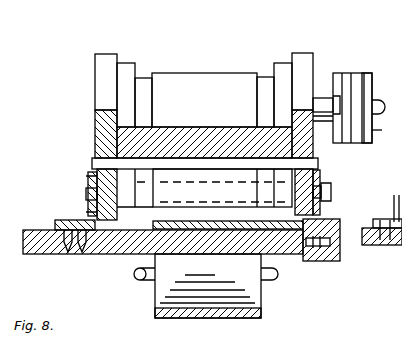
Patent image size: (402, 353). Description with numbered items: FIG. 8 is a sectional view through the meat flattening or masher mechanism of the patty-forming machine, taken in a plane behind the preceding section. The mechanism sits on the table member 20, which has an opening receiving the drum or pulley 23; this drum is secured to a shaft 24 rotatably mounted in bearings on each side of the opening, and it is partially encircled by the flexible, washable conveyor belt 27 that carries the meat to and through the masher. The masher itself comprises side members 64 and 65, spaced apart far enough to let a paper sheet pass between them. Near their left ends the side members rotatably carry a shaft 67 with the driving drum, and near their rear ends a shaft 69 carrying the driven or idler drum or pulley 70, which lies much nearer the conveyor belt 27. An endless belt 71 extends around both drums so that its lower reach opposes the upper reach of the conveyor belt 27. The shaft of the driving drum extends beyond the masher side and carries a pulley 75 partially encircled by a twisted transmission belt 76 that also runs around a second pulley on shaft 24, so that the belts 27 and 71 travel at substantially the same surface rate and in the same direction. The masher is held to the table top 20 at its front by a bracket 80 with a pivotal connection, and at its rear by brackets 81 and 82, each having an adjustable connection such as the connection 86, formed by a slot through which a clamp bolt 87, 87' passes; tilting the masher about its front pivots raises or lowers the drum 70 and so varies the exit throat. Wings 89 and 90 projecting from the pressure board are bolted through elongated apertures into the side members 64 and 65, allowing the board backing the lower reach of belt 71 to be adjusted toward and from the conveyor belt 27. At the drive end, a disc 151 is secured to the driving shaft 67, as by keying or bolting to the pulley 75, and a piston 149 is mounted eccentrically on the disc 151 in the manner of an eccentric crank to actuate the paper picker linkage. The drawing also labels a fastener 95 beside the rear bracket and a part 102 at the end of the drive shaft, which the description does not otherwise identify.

The table member 20 is at (118, 248).
The drum or pulley 23 is at (252, 292).
The shaft 24 is at (142, 280).
The belt 27 is at (240, 318).
The side member 64 is at (301, 62).
The side member 65 is at (100, 98).
The shaft 67 is at (327, 100).
The shaft 69 is at (222, 140).
The drum or pulley 70 is at (206, 132).
The belt 71 is at (204, 80).
The pulley 75 is at (334, 96).
The transmission belt 76 is at (349, 85).
The bracket 80 is at (388, 220).
The bracket 81 is at (322, 218).
The bracket 82 is at (80, 226).
The adjustable connection 86 is at (90, 190).
The clamp bolt 87 is at (343, 192).
The clamp bolt 87' is at (66, 185).
The wing 89 is at (126, 72).
The wing 90 is at (280, 80).
The bolt 95 is at (326, 188).
The shaft end 102 is at (387, 141).
The piston 149 is at (390, 110).
The disc 151 is at (366, 82).